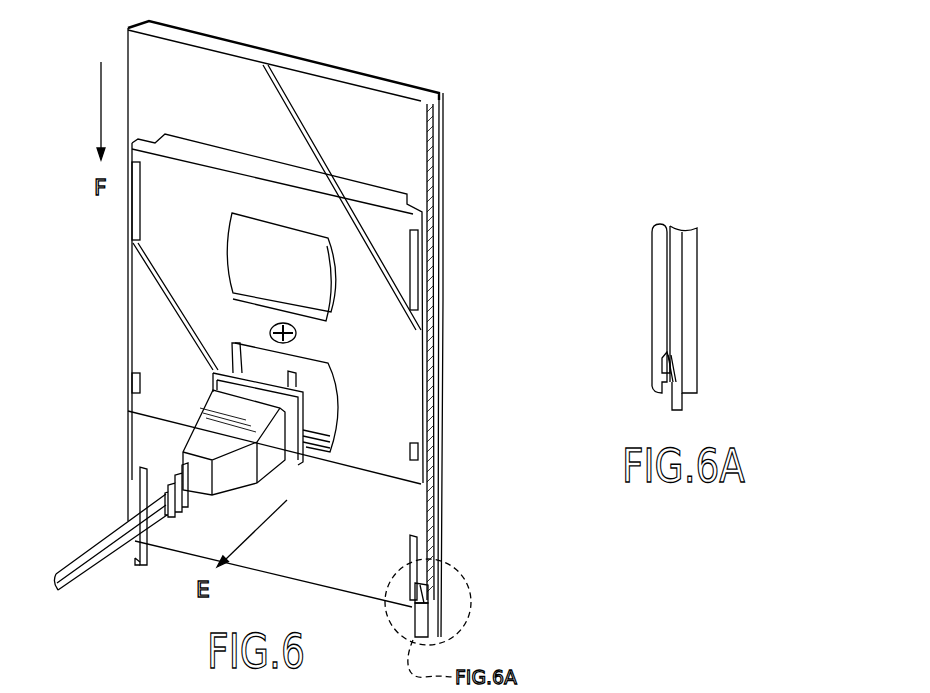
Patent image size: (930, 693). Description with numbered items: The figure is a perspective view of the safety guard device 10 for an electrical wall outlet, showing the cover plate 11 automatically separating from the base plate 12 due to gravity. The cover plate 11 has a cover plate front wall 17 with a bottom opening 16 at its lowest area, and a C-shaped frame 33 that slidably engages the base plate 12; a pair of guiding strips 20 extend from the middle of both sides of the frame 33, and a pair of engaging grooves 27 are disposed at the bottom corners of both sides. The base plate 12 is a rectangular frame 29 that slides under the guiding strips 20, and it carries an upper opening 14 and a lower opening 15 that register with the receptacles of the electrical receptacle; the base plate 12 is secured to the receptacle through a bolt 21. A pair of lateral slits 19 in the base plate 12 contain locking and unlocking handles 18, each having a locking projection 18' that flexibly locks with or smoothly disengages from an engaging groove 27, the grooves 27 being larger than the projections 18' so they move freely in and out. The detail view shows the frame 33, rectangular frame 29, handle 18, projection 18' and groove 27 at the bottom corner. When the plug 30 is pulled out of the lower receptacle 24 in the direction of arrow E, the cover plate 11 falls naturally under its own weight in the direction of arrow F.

In FIG. 6, the safety guard device 10 is at (378, 53).
In FIG. 6, the cover plate 11 is at (116, 322).
In FIG. 6, the base plate 12 is at (348, 608).
In FIG. 6, the upper opening 14 is at (245, 240).
In FIG. 6, the lower opening 15 is at (331, 423).
In FIG. 6, the bottom opening 16 is at (313, 447).
In FIG. 6, the cover plate front wall 17 is at (229, 90).
In FIG. 6, the locking and unlocking handle 18 is at (306, 608).
In FIG. 6A, the locking and unlocking handle 18 is at (715, 404).
In FIG. 6, the locking projection 18' is at (469, 600).
In FIG. 6A, the locking projection 18' is at (716, 363).
In FIG. 6, the lateral slit 19 is at (145, 490).
In FIG. 6, the guiding strip 20 is at (133, 228).
In FIG. 6, the bolt 21 is at (296, 334).
In FIG. 6, the lower receptacle 24 is at (250, 362).
In FIG. 6, the engaging groove 27 is at (133, 383).
In FIG. 6A, the engaging groove 27 is at (660, 362).
In FIG. 6A, the rectangular frame 29 is at (690, 308).
In FIG. 6, the plug 30 is at (200, 443).
In FIG. 6, the C-shaped frame 33 is at (318, 67).
In FIG. 6A, the C-shaped frame 33 is at (656, 275).